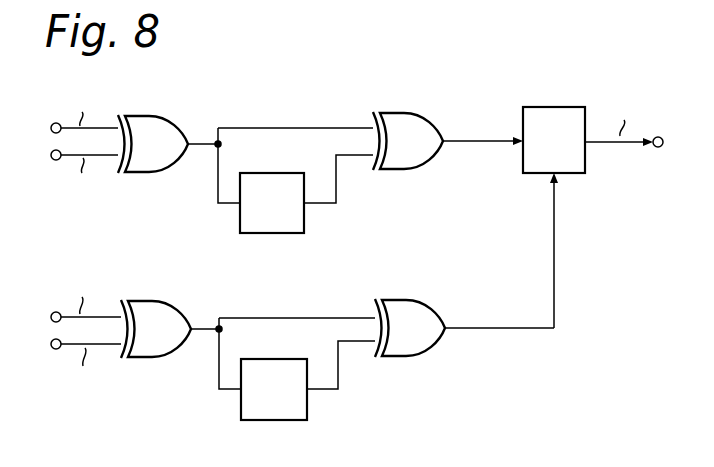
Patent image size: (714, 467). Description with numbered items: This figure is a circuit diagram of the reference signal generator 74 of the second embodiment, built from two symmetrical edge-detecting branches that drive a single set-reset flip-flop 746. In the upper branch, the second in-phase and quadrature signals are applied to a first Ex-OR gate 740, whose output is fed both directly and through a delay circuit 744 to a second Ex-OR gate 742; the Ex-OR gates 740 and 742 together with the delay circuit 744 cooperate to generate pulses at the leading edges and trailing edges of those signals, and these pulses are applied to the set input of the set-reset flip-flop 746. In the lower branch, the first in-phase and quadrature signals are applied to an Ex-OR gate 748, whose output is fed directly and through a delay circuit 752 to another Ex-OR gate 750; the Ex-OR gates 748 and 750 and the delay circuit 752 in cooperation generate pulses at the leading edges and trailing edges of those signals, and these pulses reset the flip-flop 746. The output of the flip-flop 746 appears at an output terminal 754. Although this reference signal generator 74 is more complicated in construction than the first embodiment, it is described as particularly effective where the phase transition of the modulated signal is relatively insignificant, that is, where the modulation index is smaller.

The reference signal generator 74 is at (541, 58).
The Ex-OR gate 740 is at (155, 114).
The Ex-OR gate 742 is at (406, 110).
The delay circuit 744 is at (272, 235).
The set-reset flip-flop 746 is at (559, 108).
The Ex-OR gate 748 is at (148, 298).
The Ex-OR gate 750 is at (410, 298).
The delay circuit 752 is at (278, 422).
The output terminal 754 is at (660, 148).